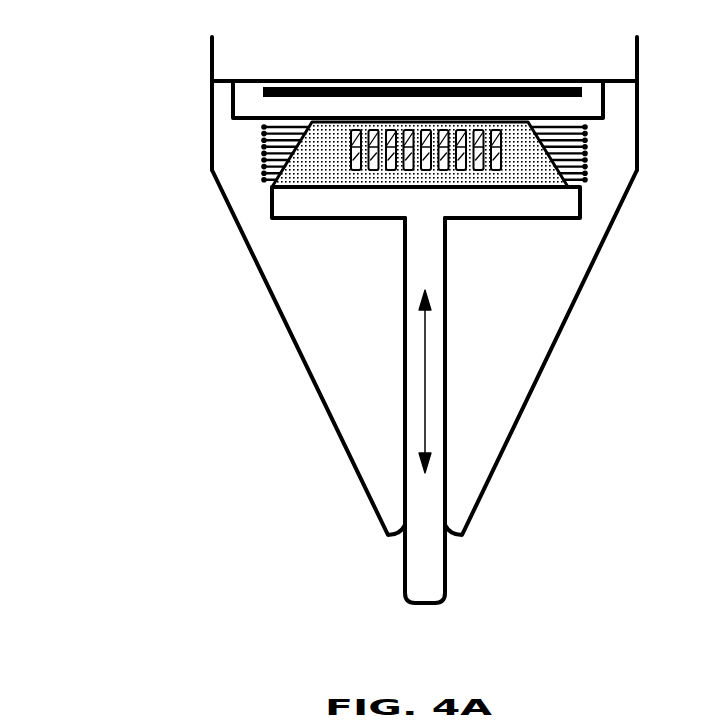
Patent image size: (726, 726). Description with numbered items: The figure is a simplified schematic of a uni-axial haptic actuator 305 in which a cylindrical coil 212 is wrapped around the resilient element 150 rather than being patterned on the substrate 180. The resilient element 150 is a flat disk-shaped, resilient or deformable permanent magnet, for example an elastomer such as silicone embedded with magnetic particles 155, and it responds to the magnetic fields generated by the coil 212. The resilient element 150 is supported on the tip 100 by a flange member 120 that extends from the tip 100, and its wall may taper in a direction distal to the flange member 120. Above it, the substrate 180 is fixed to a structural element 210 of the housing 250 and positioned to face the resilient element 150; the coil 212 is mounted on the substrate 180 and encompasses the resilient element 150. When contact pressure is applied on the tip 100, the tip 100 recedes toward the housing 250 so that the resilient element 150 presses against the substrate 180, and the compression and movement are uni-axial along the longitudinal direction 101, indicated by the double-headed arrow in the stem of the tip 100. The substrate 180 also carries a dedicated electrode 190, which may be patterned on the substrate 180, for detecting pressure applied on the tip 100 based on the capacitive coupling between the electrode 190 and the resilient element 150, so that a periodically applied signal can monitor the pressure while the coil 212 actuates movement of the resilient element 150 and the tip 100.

The tip 100 is at (445, 445).
The longitudinal direction 101 is at (430, 372).
The flange member 120 is at (520, 222).
The resilient element 150 is at (310, 170).
The magnetic particles 155 is at (391, 172).
The substrate 180 is at (605, 95).
The electrode 190 is at (447, 87).
The structural element 210 is at (220, 82).
The coil 212 is at (238, 135).
The housing 250 is at (553, 350).
The haptic actuator 305 is at (132, 157).